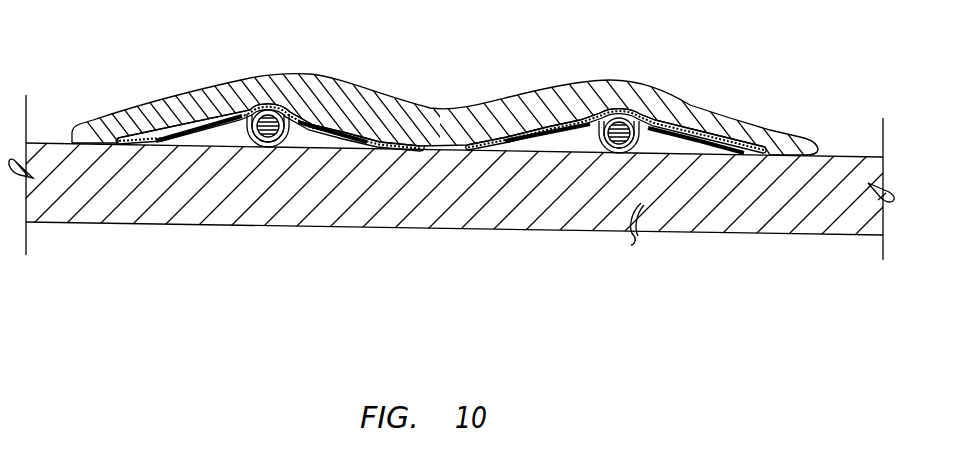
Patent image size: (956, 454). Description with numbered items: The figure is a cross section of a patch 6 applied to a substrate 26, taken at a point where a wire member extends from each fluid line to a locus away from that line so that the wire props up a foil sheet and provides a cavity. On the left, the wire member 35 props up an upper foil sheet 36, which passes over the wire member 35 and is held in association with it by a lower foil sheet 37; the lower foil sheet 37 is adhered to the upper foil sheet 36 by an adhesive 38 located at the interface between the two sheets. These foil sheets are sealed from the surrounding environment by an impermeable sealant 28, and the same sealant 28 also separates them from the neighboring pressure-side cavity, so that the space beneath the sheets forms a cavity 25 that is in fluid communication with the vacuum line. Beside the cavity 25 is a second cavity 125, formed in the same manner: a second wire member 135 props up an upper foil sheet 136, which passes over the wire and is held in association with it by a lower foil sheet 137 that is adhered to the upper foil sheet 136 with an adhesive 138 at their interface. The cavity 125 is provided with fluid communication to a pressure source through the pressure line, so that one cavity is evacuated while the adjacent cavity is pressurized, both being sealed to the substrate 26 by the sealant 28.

The patch 6 is at (594, 74).
The cavity 25 is at (233, 137).
The substrate 26 is at (422, 200).
The sealant 28 is at (458, 104).
The wire member 35 is at (258, 106).
The upper foil sheet 36 is at (193, 108).
The lower foil sheet 37 is at (362, 128).
The adhesive 38 is at (305, 112).
The cavity 125 is at (583, 143).
The tubular bead (right) 135 is at (619, 127).
The upper foil sheet 136 is at (658, 124).
The lower foil sheet 137 is at (735, 142).
The adhesive 138 is at (694, 128).